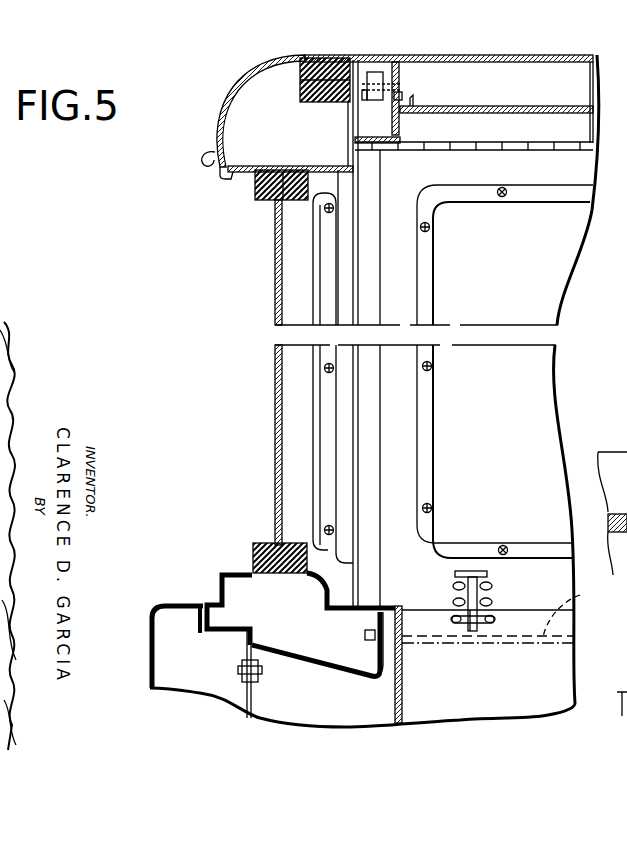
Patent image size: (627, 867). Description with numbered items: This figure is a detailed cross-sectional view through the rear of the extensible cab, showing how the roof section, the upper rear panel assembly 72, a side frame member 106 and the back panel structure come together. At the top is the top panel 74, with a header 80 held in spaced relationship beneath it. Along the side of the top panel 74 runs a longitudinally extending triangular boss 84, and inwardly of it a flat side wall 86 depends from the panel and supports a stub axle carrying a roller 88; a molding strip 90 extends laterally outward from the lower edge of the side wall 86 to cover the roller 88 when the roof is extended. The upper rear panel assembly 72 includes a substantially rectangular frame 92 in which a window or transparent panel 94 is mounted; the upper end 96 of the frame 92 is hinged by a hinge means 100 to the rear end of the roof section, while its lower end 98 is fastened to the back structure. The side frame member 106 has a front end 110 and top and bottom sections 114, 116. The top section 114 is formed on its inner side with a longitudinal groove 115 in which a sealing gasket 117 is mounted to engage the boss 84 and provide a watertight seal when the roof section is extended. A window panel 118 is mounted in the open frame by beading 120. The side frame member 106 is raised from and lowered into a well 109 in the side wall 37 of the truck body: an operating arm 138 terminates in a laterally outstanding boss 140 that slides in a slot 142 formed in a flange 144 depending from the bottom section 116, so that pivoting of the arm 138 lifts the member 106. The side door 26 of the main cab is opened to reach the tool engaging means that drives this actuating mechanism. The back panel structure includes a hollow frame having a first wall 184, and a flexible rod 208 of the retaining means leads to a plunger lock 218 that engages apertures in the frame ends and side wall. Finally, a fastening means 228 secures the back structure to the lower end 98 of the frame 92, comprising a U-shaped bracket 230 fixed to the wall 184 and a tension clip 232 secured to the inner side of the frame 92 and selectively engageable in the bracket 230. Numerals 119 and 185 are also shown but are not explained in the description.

The side door 26 is at (622, 480).
The side wall 37 is at (163, 605).
The upper rear panel assembly 72 is at (396, 422).
The top panel 74 is at (494, 57).
The header 80 is at (497, 117).
The triangular boss 84 is at (316, 57).
The side wall 86 is at (402, 78).
The roller 88 is at (406, 131).
The molding strip 90 is at (365, 151).
The frame 92 is at (397, 505).
The window 94 is at (552, 268).
The upper end 96 is at (423, 151).
The lower end 98 is at (416, 607).
The hinge means 100 is at (480, 151).
The frame member 106 is at (232, 96).
The well 109 is at (267, 727).
The front end 110 is at (400, 278).
The top section 114 is at (268, 65).
The longitudinal groove 115 is at (323, 103).
The bottom section 116 is at (302, 658).
The sealing gasket 117 is at (308, 102).
The window panel 118 is at (273, 296).
The gasket 119 is at (302, 79).
The beading 120 is at (330, 467).
The operating arm 138 is at (252, 702).
The boss 140 is at (258, 673).
The slot 142 is at (240, 668).
The flange 144 is at (253, 649).
The first wall 184 is at (567, 623).
The rail 185 is at (560, 673).
The flexible rod 208 is at (578, 613).
The plunger lock 218 is at (385, 667).
The fastening means 228 is at (491, 591).
The U-shaped bracket 230 is at (480, 637).
The tension clip 232 is at (471, 571).